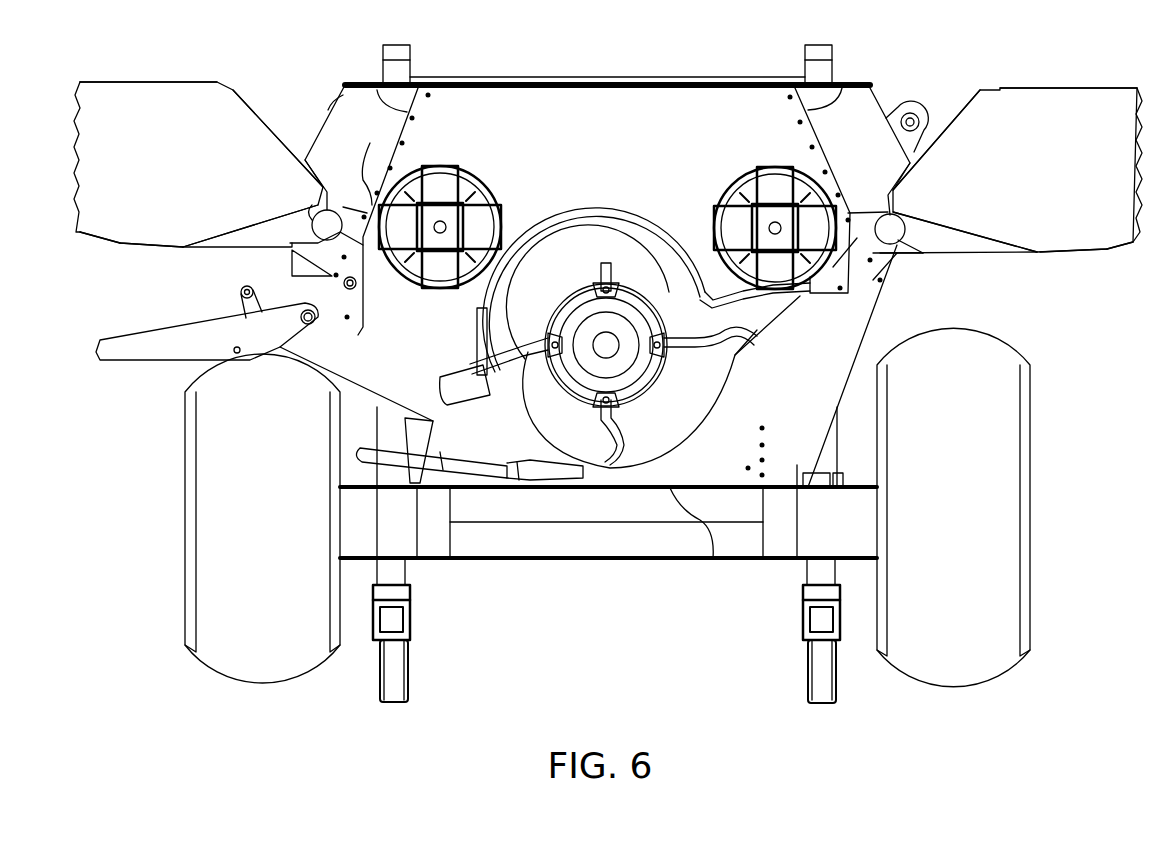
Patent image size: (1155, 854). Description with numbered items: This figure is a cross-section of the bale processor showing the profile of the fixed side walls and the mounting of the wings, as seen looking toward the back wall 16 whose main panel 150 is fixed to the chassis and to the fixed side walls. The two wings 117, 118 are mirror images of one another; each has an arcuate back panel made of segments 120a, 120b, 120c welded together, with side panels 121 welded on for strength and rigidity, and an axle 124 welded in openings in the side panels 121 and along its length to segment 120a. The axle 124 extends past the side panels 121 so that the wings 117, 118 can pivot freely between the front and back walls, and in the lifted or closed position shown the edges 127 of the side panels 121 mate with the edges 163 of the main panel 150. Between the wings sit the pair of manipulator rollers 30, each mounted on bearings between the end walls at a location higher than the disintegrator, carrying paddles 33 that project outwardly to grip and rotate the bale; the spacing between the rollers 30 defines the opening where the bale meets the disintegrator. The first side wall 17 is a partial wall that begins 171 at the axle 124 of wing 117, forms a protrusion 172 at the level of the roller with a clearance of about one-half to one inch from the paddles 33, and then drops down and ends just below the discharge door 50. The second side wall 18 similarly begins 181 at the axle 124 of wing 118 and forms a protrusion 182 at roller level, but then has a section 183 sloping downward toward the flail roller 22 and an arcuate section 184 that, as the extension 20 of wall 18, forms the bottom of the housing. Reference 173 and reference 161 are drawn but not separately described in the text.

The back wall 16 is at (640, 82).
The main panel 150 is at (532, 82).
The first side wall 17 is at (365, 300).
The lower edge of side plate 173 is at (350, 328).
The protrusion 172 is at (398, 140).
The beginning of wall 17 171 is at (342, 212).
The second side wall 18 is at (773, 318).
The sloping section 183 is at (868, 298).
The protrusion 182 is at (858, 207).
The beginning of wall 18 181 is at (905, 212).
The bracket lug 161 is at (343, 105).
The extension panel 163 is at (372, 84).
The paddles 33 is at (440, 168).
The manipulator rollers 30 is at (446, 227).
The flail roller 22 is at (618, 360).
The bottom of the housing 20 is at (550, 556).
The arcuate section 184 is at (706, 558).
The discharge door 50 is at (150, 357).
The wing 117 is at (130, 90).
The wing 118 is at (1028, 92).
The side panels 121 is at (178, 82).
The edges 127 is at (238, 90).
The segment 120a is at (215, 235).
The segment 120b is at (160, 250).
The segment 120c is at (97, 250).
The axle 124 is at (300, 258).